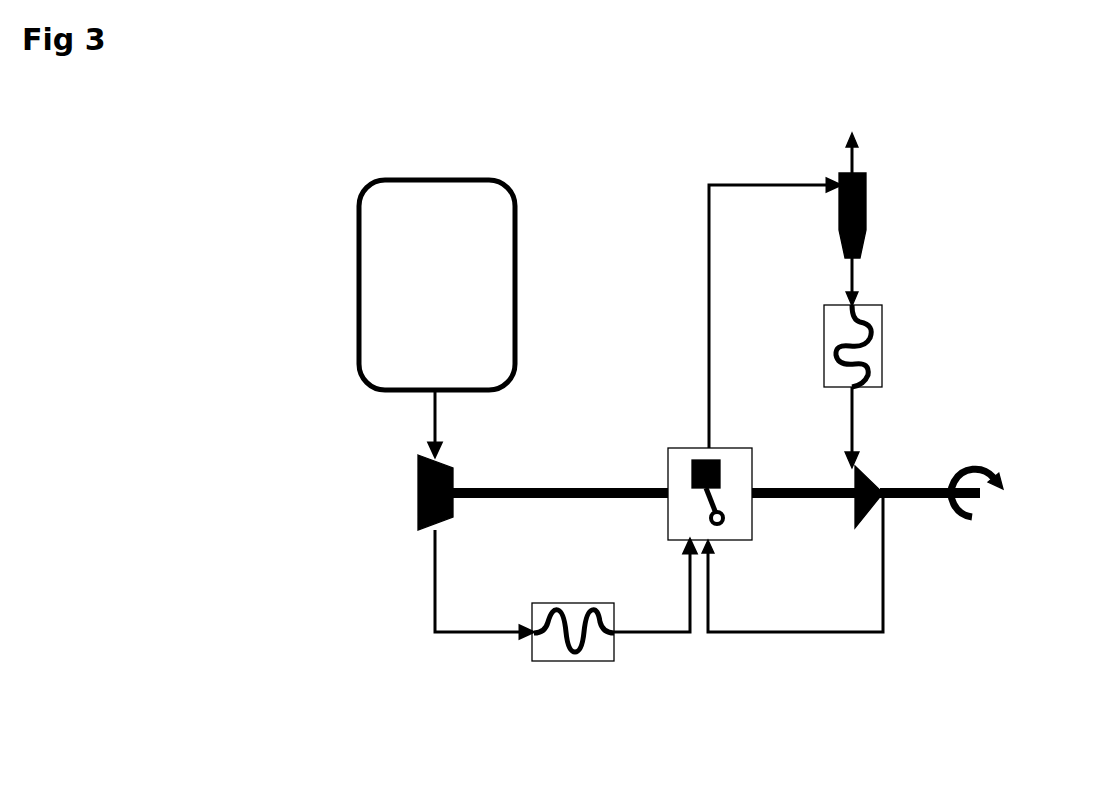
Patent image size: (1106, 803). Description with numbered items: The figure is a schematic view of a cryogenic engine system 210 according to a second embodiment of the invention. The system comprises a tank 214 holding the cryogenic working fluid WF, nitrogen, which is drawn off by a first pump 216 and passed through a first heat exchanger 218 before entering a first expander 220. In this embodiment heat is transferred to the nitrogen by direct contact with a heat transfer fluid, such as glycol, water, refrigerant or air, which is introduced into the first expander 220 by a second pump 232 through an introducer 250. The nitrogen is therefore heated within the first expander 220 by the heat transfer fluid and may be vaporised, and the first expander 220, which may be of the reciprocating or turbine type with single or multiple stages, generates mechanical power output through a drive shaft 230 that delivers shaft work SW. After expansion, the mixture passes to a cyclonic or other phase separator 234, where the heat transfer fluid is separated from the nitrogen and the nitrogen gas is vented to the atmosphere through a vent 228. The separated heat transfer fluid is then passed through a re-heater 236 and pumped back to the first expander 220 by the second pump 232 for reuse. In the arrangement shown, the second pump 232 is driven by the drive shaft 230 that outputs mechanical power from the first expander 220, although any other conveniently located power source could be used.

The cryogenic engine system 210 is at (605, 99).
The tank 214 is at (490, 197).
The working fluid WF is at (493, 255).
The first pump 216 is at (418, 497).
The first heat exchanger 218 is at (600, 657).
The first expander 220 is at (692, 449).
The introducer 250 is at (710, 553).
The vent 228 is at (855, 160).
The phase separator 234 is at (866, 228).
The re-heater 236 is at (876, 340).
The second pump 232 is at (850, 473).
The drive shaft 230 is at (925, 487).
The shaft work output SW is at (1017, 493).